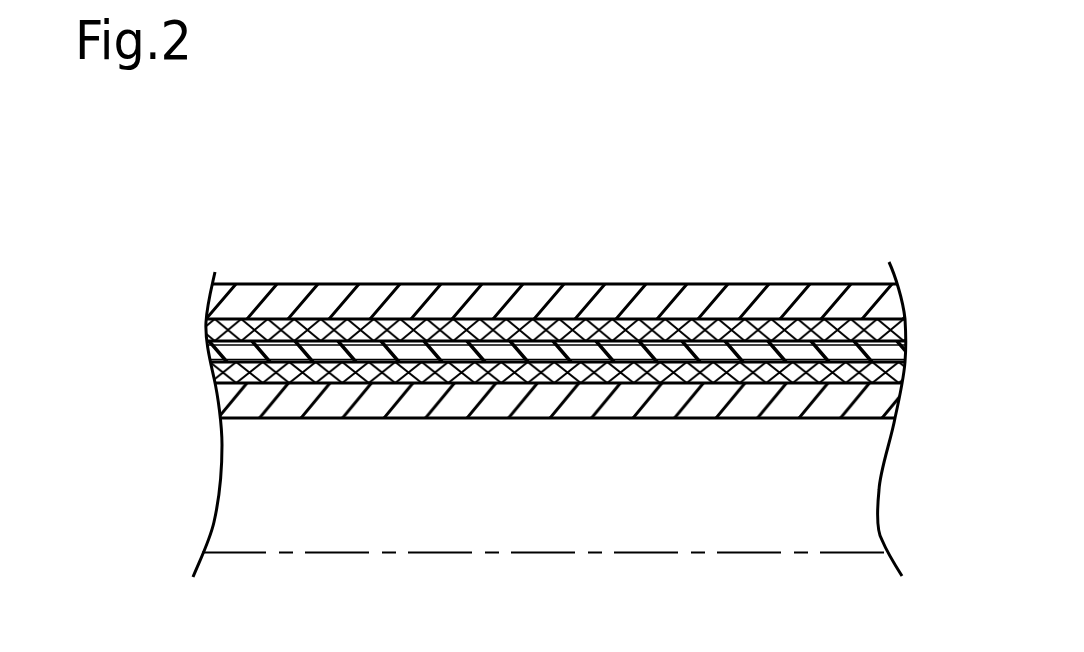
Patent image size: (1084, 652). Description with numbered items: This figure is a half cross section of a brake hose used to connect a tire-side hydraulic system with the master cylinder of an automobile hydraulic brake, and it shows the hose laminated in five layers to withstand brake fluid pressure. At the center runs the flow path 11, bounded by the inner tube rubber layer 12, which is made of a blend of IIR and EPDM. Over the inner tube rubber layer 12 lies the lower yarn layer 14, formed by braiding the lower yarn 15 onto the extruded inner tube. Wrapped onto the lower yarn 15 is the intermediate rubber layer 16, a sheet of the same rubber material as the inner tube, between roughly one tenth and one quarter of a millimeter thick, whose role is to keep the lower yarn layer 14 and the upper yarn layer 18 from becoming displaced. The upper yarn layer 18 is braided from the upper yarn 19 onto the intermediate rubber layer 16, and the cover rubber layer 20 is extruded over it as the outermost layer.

The flow path 11 is at (228, 485).
The inner tube rubber layer 12 is at (216, 400).
The lower yarn layer 14 is at (486, 388).
The lower yarn 15 is at (210, 375).
The intermediate rubber layer 16 is at (210, 354).
The upper yarn layer 18 is at (487, 315).
The upper yarn 19 is at (208, 330).
The cover rubber layer 20 is at (247, 296).